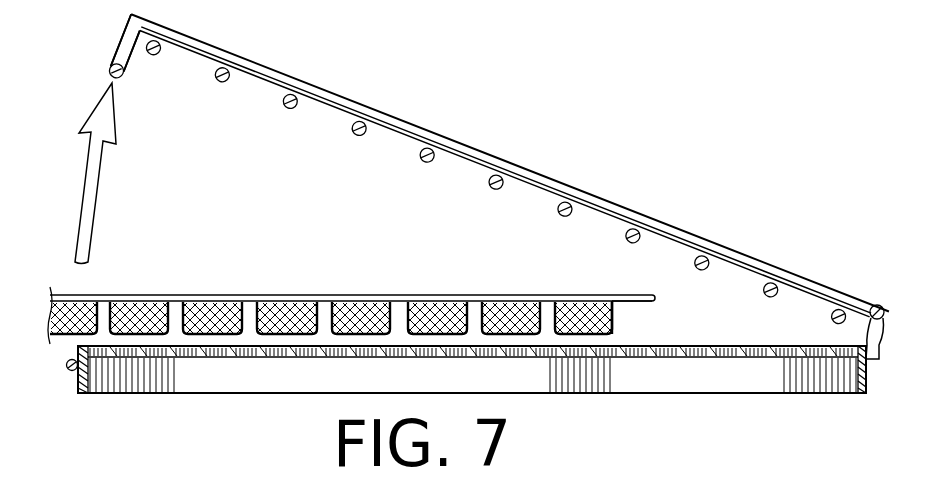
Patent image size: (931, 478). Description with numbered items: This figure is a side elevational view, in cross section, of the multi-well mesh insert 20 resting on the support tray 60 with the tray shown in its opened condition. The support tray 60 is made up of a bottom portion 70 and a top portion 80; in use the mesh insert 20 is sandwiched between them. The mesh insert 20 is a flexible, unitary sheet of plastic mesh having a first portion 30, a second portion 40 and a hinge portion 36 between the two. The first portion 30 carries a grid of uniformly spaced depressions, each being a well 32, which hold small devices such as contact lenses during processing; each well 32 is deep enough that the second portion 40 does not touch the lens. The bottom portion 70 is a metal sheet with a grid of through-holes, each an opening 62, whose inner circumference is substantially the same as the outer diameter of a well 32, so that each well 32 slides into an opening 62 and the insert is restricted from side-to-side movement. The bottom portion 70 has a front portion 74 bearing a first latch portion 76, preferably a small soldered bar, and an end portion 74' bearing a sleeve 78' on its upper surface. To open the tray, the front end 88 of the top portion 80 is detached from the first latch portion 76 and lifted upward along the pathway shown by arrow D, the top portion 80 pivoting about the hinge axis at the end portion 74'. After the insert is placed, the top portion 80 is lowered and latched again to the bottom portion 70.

The mesh insert 20 is at (341, 346).
The first portion 30 is at (621, 308).
The well 32 is at (218, 323).
The hinge portion 36 is at (650, 294).
The second portion 40 is at (370, 295).
The support tray 60 is at (730, 246).
The opening 62 is at (726, 352).
The bottom portion 70 is at (463, 410).
The front portion 74 is at (102, 395).
The end portion 74' is at (860, 397).
The first latch portion 76 is at (68, 372).
The sleeve 78' is at (857, 296).
The top portion 80 is at (323, 83).
The front end 88 is at (124, 16).
The arrow D is at (95, 210).